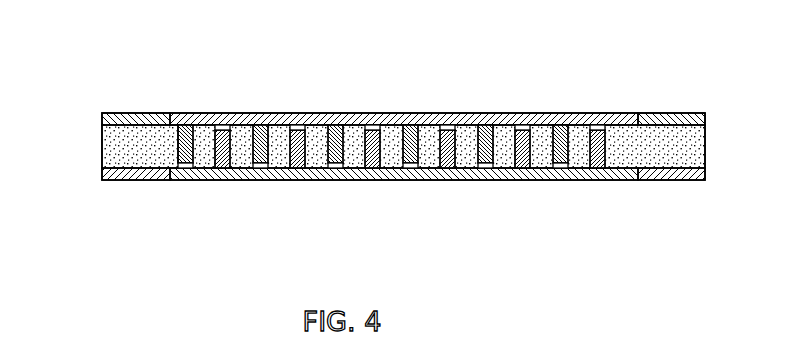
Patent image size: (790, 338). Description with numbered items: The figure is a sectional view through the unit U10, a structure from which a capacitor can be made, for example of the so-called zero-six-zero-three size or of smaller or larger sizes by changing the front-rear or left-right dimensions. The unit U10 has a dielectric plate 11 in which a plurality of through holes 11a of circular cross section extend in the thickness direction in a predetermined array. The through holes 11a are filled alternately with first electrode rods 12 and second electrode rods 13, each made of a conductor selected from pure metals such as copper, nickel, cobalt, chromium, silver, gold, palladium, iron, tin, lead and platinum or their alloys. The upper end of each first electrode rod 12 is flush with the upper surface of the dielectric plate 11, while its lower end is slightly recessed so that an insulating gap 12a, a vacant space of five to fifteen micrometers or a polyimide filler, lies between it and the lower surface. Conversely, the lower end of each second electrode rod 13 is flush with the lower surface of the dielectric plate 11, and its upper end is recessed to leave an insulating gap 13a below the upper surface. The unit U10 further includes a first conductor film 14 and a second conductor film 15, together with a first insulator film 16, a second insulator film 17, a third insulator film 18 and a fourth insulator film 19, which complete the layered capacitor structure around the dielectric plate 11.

The unit U10 is at (113, 110).
The dielectric plate 11 is at (108, 132).
The through hole 11a is at (177, 146).
The first electrode rod 12 is at (185, 120).
The insulating gap 12a is at (184, 180).
The second electrode rod 13 is at (221, 180).
The insulating gap 13a is at (222, 127).
The first conductor film 14 is at (622, 113).
The second conductor film 15 is at (624, 180).
The first insulator film 16 is at (134, 113).
The second insulator film 17 is at (672, 113).
The third insulator film 18 is at (135, 180).
The fourth insulator film 19 is at (672, 180).